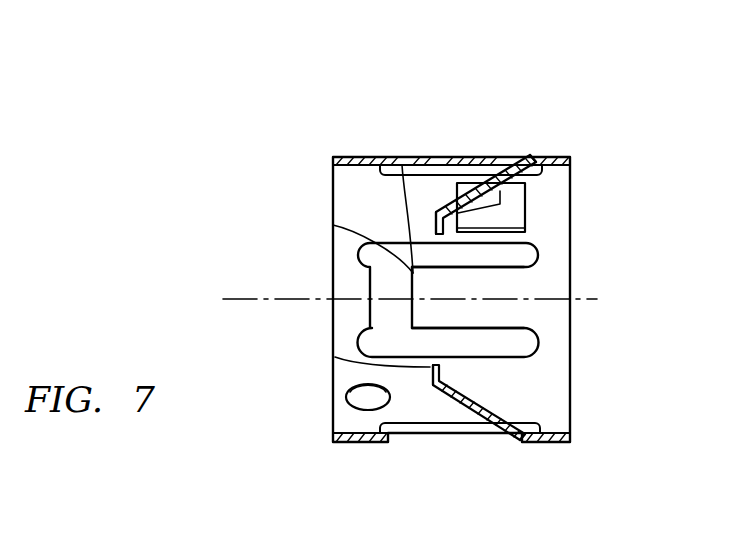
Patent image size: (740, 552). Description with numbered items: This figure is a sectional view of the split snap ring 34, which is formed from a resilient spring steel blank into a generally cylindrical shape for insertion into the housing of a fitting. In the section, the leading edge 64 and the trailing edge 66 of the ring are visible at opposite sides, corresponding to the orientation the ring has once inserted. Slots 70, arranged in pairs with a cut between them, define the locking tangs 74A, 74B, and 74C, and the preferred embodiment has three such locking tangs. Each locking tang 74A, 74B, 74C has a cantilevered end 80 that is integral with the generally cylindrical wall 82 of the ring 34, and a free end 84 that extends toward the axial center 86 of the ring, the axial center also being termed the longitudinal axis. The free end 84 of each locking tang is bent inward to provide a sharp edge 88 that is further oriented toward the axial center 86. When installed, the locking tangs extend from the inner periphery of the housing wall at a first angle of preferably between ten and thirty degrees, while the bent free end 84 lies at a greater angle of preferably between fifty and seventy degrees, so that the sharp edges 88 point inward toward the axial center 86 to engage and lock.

The split snap ring 34 is at (212, 173).
The leading edge 64 is at (350, 388).
The trailing edge 66 is at (571, 401).
The slots 70 is at (508, 252).
The locking tang 74A is at (461, 405).
The locking tang 74B is at (430, 312).
The locking tang 74C is at (481, 195).
The cantilevered end 80 is at (520, 166).
The cylindrical wall 82 is at (352, 157).
The free end 84 is at (438, 212).
The axial center 86 is at (250, 298).
The sharp edge 88 is at (408, 157).